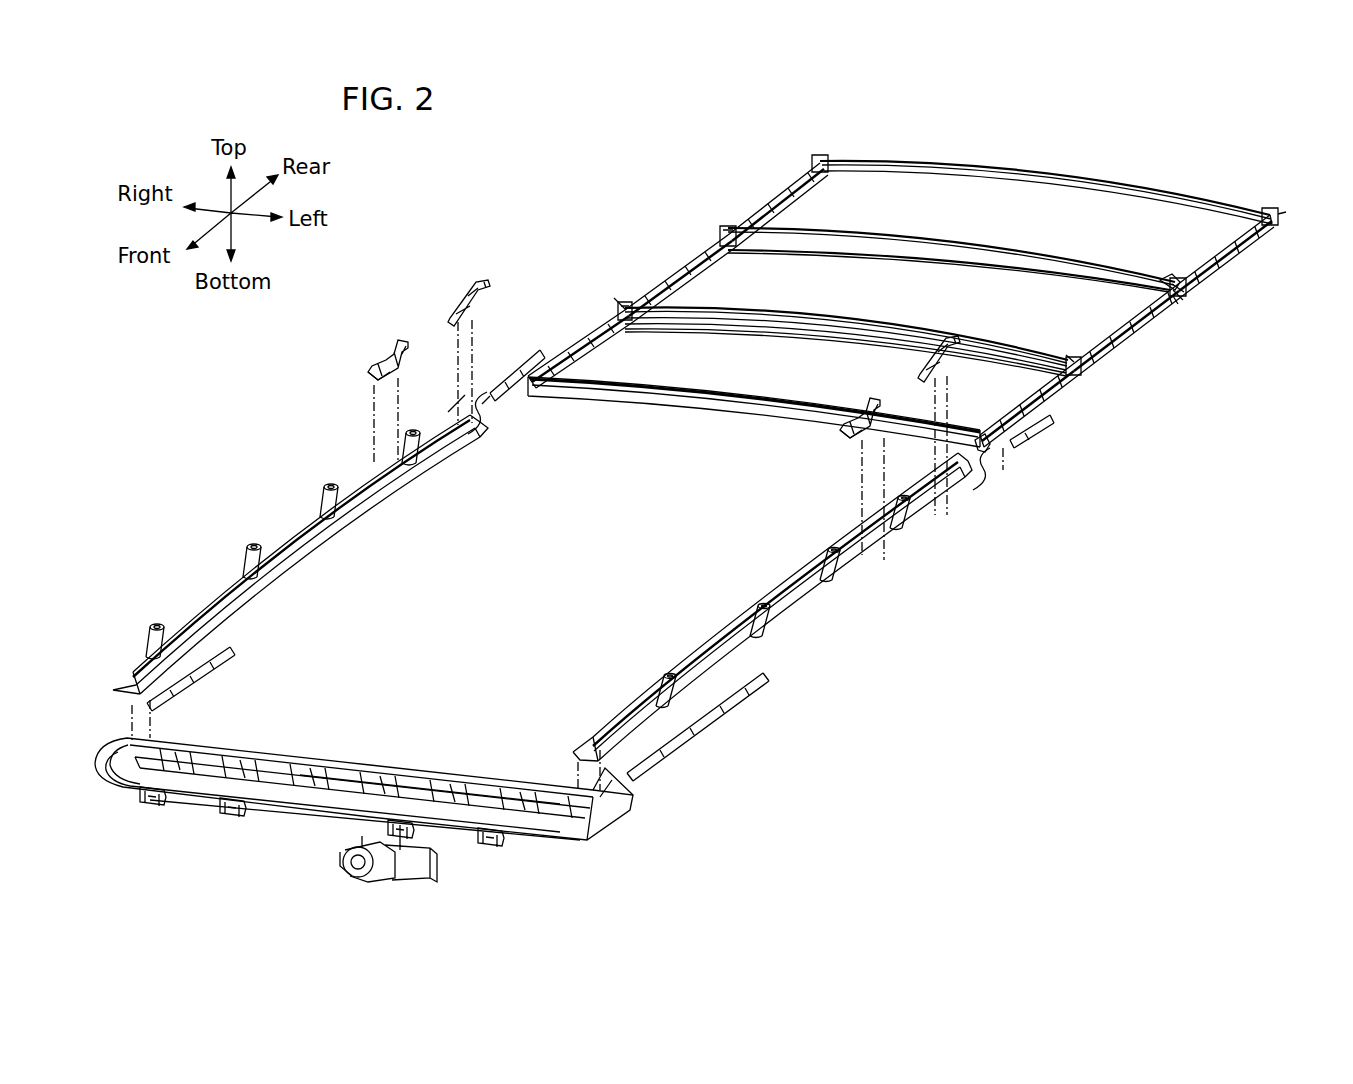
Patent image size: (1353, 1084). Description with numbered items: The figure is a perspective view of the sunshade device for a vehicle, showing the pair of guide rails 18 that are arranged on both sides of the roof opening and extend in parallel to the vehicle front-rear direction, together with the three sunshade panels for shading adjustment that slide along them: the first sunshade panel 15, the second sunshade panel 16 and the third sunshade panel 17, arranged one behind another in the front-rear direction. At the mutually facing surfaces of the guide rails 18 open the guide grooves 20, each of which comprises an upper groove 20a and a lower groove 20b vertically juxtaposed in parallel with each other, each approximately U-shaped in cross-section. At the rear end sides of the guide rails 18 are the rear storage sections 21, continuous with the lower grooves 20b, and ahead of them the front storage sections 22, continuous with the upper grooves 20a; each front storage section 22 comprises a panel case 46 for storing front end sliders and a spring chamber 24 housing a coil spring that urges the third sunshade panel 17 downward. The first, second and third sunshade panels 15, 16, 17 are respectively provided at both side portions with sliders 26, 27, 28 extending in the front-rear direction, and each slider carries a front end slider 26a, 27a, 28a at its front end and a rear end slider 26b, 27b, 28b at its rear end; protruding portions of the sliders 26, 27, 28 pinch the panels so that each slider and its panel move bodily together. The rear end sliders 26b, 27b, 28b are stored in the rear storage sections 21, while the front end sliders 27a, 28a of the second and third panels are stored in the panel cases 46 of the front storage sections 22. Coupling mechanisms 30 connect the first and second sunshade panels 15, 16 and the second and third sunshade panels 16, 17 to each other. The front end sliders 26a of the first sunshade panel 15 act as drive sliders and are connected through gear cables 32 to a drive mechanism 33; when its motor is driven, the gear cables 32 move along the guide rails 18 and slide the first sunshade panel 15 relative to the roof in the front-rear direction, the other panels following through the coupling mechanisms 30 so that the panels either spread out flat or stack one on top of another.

The first sunshade panel 15 is at (592, 382).
The second sunshade panel 16 is at (685, 283).
The third sunshade panel 17 is at (798, 205).
The guide rail 18 is at (542, 588).
The guide groove 20 is at (542, 588).
The upper groove 20a is at (550, 580).
The lower groove 20b is at (262, 588).
The rear storage section 21 is at (468, 290).
The front storage section 22 is at (621, 359).
The spring chamber 24 is at (400, 340).
The slider 26 is at (849, 357).
The front end slider 26a is at (990, 447).
The rear end slider 26b is at (620, 330).
The slider 27 is at (926, 257).
The front end slider 27a is at (620, 298).
The rear end slider 27b is at (722, 240).
The slider 28 is at (1023, 188).
The front end slider 28a is at (730, 222).
The rear end slider 28b is at (815, 158).
The coupling mechanism 30 is at (1168, 278).
The gear cable 32 is at (185, 688).
The drive mechanism 33 is at (382, 884).
The panel case 46 is at (385, 358).